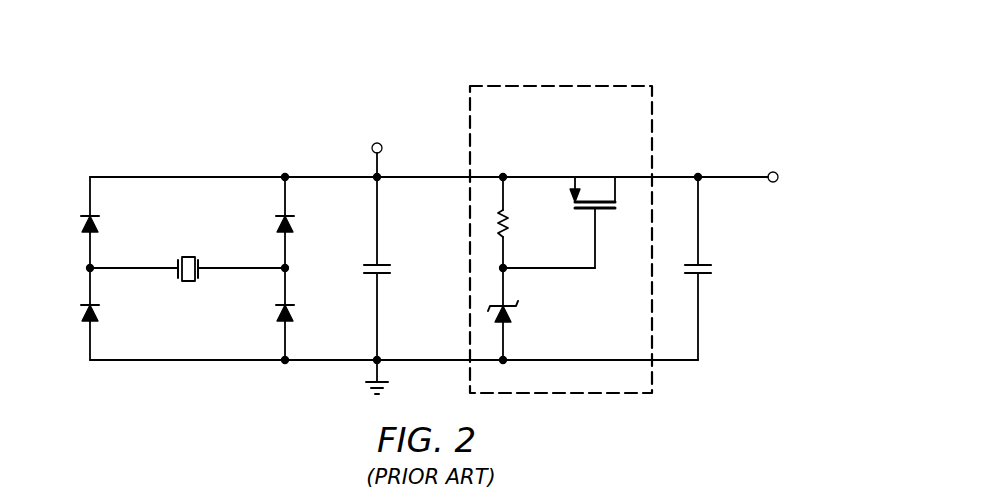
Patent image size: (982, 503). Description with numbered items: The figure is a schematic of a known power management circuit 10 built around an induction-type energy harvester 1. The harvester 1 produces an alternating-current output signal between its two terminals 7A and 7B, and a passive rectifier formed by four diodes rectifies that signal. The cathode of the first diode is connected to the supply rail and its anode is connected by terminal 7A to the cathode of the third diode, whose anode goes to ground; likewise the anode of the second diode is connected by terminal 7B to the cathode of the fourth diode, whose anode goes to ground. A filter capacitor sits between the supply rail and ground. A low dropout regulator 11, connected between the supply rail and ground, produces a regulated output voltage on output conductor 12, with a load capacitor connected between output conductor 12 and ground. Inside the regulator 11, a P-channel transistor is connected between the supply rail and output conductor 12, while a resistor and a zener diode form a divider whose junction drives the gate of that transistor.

The power management circuit 10 is at (204, 78).
The LDO regulator 11 is at (585, 74).
The output conductor 12 is at (732, 175).
The terminal 7A is at (153, 268).
The terminal 7B is at (222, 268).
The induction-type energy harvester 1 is at (187, 282).